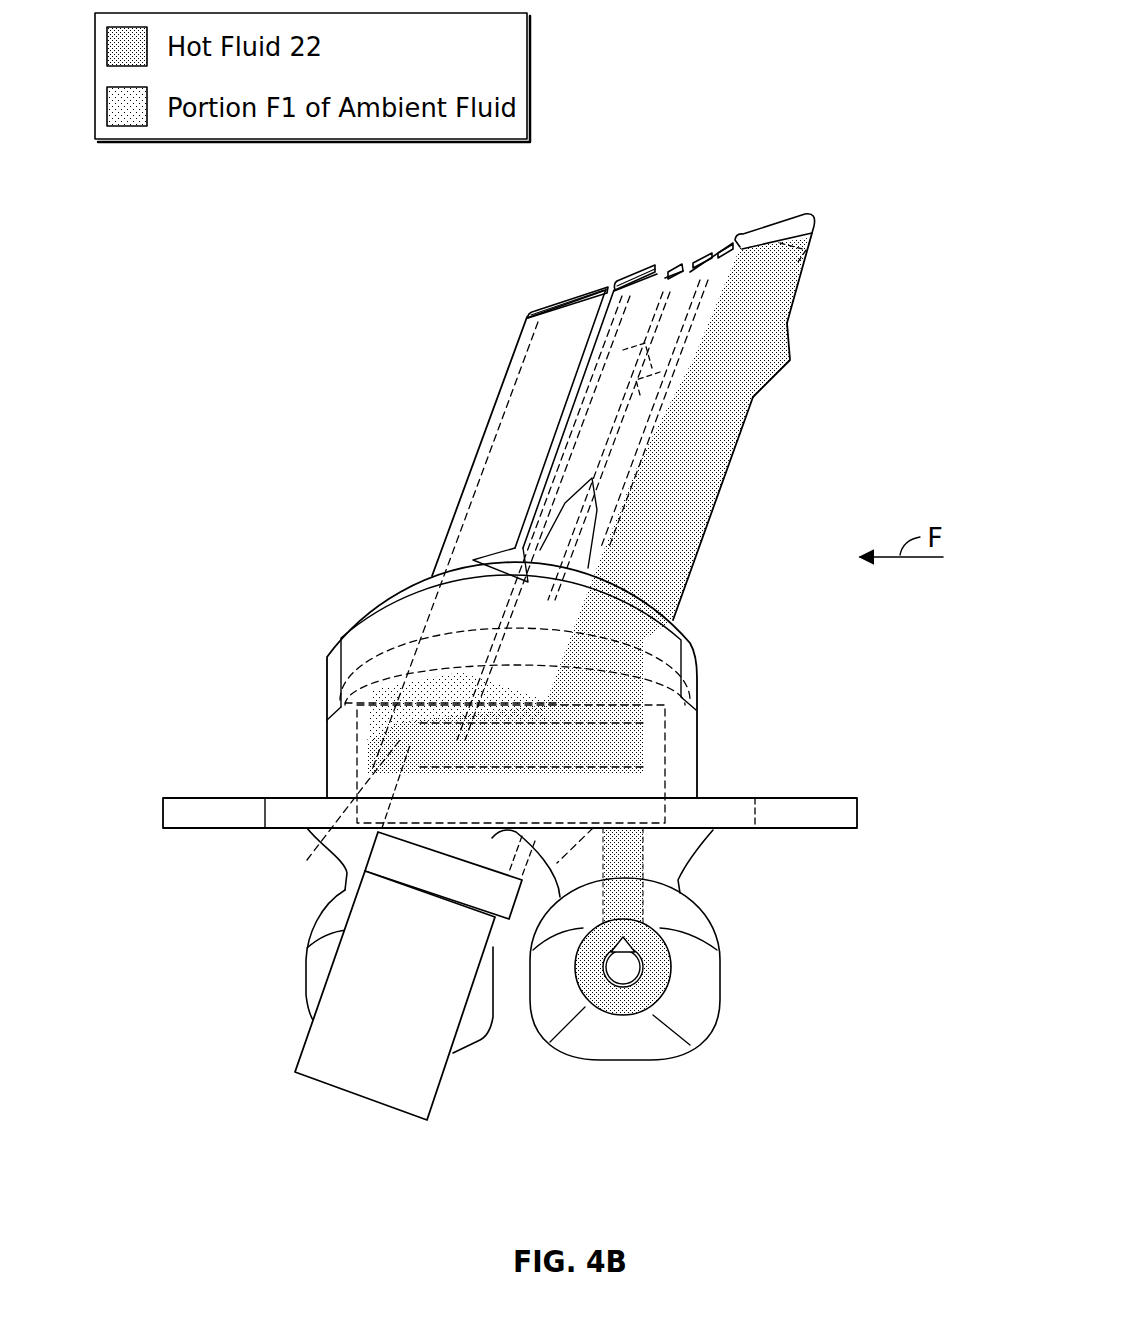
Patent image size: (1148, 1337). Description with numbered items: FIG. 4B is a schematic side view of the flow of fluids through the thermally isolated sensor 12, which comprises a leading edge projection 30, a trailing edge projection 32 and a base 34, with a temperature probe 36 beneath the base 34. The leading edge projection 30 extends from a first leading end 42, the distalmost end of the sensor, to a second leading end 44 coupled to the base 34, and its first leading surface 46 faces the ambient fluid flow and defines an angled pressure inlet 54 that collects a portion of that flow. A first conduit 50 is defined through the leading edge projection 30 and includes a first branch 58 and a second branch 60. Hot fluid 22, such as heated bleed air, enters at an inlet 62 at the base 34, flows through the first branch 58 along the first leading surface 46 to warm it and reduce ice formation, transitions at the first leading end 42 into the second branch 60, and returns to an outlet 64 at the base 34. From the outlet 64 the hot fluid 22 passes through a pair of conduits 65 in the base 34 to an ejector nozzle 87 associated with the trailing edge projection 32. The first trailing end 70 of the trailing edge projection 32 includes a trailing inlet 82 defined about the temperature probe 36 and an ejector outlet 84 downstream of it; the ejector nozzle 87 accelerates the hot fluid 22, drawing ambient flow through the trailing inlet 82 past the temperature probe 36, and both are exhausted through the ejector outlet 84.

The thermally isolated sensor 12 is at (932, 163).
The hot fluid 22 is at (657, 967).
The leading edge projection 30 is at (802, 150).
The trailing edge projection 32 is at (646, 248).
The base 34 is at (823, 740).
The temperature probe 36 is at (445, 1083).
The first leading end 42 is at (818, 223).
The second leading end 44 is at (668, 643).
The first leading surface 46 is at (720, 498).
The first conduit 50 is at (732, 470).
The pressure inlet 54 is at (789, 343).
The first branch 58 is at (751, 424).
The second branch 60 is at (700, 563).
The inlet 62 is at (640, 725).
The outlet 64 is at (635, 753).
The pair of conduits 65 is at (307, 860).
The first trailing end 70 is at (565, 248).
The trailing inlet 82 is at (633, 273).
The ejector outlet 84 is at (550, 310).
The ejector nozzle 87 is at (380, 737).